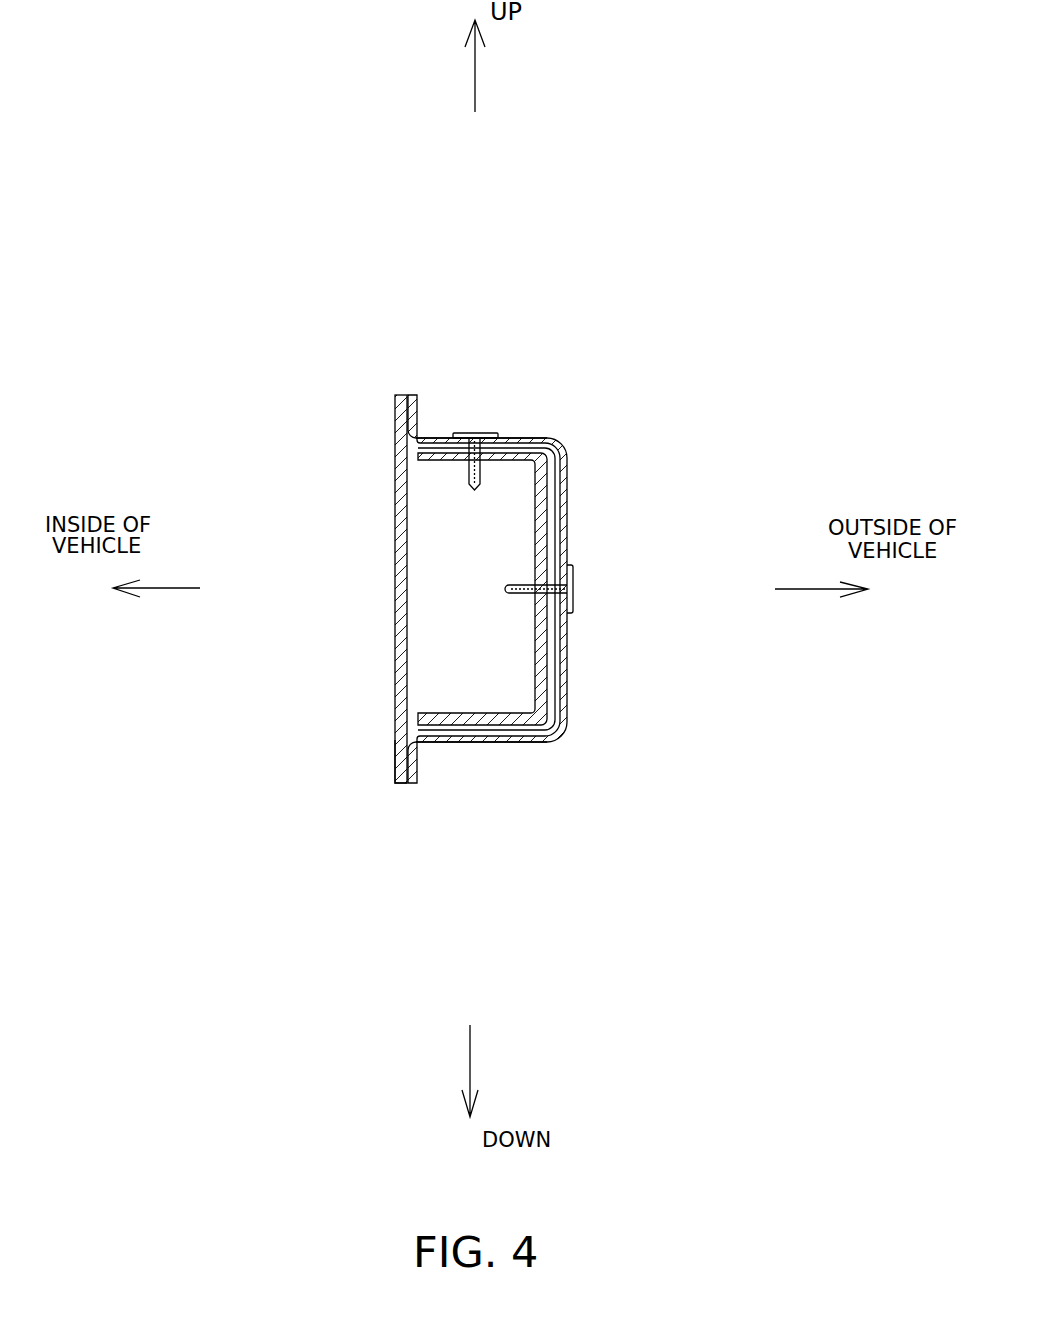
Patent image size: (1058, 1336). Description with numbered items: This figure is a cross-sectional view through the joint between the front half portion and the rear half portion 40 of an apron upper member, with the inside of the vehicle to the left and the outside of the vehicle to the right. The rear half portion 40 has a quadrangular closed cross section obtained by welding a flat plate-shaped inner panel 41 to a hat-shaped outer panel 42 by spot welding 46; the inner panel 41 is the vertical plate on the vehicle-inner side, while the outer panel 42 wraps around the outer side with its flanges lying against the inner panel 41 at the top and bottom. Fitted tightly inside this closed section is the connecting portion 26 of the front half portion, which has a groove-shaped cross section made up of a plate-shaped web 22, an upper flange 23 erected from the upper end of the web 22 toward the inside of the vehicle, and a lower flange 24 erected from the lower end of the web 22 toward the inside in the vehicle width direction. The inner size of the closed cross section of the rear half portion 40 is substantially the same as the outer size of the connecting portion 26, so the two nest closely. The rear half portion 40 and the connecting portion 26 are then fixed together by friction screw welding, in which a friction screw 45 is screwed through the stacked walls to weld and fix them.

The web 22 is at (565, 693).
The upper flange 23 is at (436, 438).
The lower flange 24 is at (472, 742).
The connecting portion 26 is at (567, 640).
The rear half portion 40 is at (594, 556).
The inner panel 41 is at (393, 437).
The outer panel 42 is at (542, 442).
The friction screw 45 is at (486, 432).
The spot welding 46 is at (393, 757).